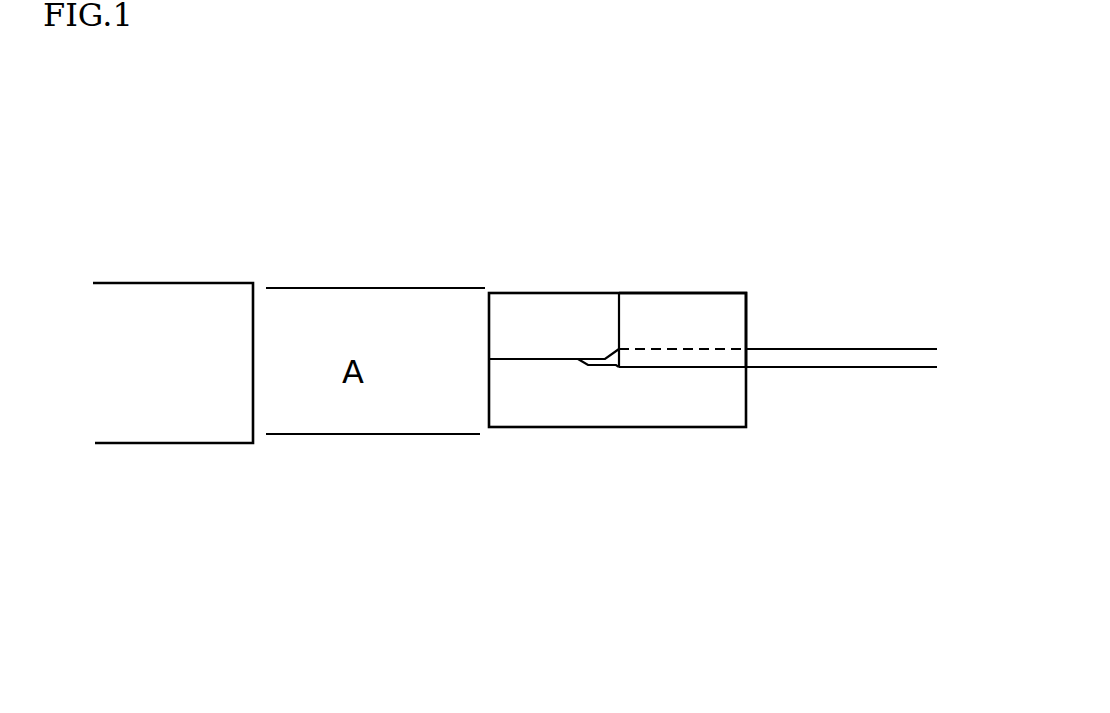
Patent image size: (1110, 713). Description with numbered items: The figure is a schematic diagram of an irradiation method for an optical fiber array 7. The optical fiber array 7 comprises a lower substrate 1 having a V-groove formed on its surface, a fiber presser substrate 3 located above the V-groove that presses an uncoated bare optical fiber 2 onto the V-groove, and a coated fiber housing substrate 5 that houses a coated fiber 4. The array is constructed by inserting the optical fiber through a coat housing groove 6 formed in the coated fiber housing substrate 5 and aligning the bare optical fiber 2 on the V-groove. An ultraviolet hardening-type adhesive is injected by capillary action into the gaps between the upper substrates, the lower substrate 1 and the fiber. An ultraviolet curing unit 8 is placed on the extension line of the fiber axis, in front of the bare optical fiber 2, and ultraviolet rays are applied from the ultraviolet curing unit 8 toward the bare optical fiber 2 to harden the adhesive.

The lower substrate 1 is at (573, 415).
The bare optical fiber 2 is at (535, 360).
The fiber presser substrate 3 is at (548, 313).
The coated fiber 4 is at (728, 355).
The coated fiber housing substrate 5 is at (692, 307).
The coat housing groove 6 is at (738, 362).
The optical fiber array 7 is at (528, 275).
The ultraviolet curing unit 8 is at (162, 317).